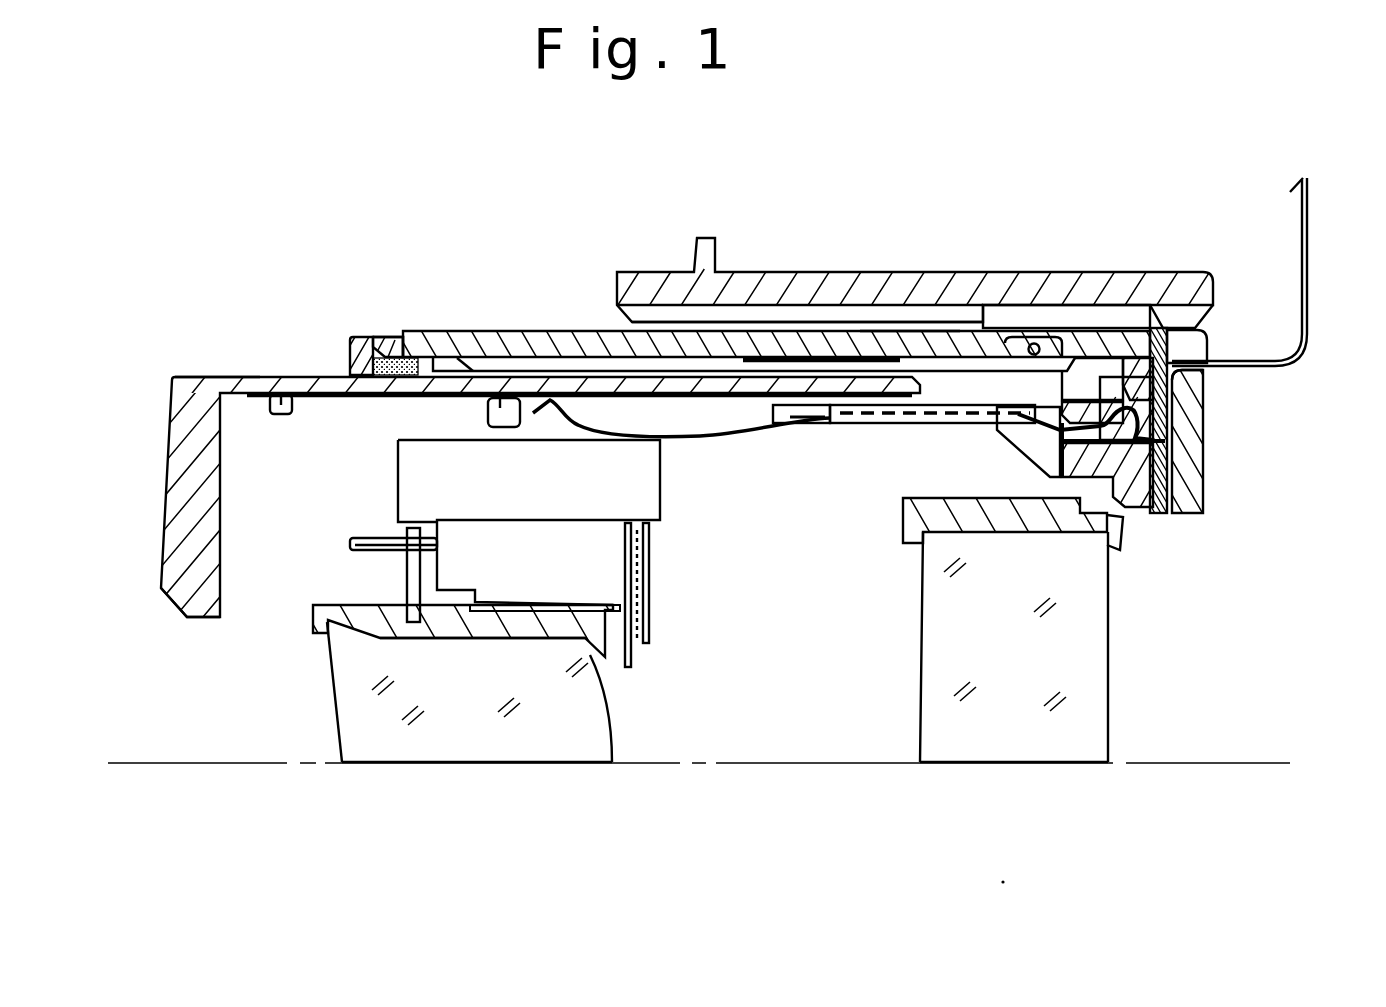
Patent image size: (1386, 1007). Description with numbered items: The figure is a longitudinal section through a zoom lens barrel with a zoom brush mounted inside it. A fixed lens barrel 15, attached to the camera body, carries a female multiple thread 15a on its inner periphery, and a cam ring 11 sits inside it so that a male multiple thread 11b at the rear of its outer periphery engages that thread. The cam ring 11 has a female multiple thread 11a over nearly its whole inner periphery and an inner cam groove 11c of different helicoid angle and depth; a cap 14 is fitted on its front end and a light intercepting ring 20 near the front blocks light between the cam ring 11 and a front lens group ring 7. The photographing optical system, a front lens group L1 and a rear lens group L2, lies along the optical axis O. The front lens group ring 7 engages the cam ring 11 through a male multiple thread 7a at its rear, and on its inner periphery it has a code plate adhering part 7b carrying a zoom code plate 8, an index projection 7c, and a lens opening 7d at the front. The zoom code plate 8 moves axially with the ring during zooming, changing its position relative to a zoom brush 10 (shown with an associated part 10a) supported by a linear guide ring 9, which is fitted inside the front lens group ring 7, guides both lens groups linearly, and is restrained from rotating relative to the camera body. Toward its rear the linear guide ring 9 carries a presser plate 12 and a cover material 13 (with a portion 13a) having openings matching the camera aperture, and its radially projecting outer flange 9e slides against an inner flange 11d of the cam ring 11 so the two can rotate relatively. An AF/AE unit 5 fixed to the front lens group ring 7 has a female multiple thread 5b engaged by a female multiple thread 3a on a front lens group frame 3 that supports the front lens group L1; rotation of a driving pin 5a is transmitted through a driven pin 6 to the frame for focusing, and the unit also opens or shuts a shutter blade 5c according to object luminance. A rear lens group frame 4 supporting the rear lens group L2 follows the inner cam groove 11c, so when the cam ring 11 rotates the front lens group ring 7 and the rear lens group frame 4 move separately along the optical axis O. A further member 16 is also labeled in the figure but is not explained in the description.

The front lens group frame 3 is at (530, 640).
The female multiple thread 3a is at (510, 640).
The rear lens group frame 4 is at (908, 530).
The AF/AE unit 5 is at (430, 492).
The driving pin 5a is at (352, 545).
The female multiple thread 5b is at (597, 603).
The shutter blade 5c is at (648, 662).
The driven pin 6 is at (340, 697).
The front lens group ring 7 is at (178, 490).
The male multiple thread 7a is at (840, 368).
The code plate adhering part 7b is at (276, 395).
The index projection 7c is at (274, 377).
The lens opening 7d is at (183, 615).
The zoom code plate 8 is at (372, 355).
The linear guide ring 9 is at (493, 387).
The outer flange 9e is at (1115, 320).
The zoom brush 10 is at (886, 442).
The flexible cable 10a is at (712, 433).
The cam ring 11 is at (553, 343).
The female multiple thread 11a is at (913, 345).
The male multiple thread 11b is at (1062, 320).
The inner cam groove 11c is at (1003, 345).
The inner flange 11d is at (1200, 330).
The presser plate 12 is at (1150, 340).
The cover material 13 is at (1197, 513).
The side wall top 13a is at (1210, 400).
The cap 14 is at (362, 338).
The fixed lens barrel 15 is at (640, 290).
The female multiple thread 15a is at (767, 315).
The outer cover bracket 16 is at (1308, 257).
The light intercepting ring 20 is at (393, 335).
The front lens group L1 is at (478, 745).
The rear lens group L2 is at (1020, 730).
The optical axis O is at (178, 765).